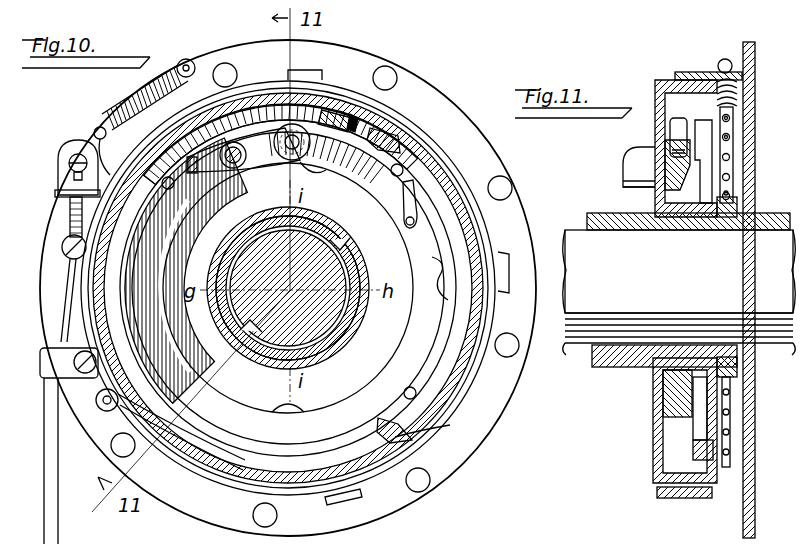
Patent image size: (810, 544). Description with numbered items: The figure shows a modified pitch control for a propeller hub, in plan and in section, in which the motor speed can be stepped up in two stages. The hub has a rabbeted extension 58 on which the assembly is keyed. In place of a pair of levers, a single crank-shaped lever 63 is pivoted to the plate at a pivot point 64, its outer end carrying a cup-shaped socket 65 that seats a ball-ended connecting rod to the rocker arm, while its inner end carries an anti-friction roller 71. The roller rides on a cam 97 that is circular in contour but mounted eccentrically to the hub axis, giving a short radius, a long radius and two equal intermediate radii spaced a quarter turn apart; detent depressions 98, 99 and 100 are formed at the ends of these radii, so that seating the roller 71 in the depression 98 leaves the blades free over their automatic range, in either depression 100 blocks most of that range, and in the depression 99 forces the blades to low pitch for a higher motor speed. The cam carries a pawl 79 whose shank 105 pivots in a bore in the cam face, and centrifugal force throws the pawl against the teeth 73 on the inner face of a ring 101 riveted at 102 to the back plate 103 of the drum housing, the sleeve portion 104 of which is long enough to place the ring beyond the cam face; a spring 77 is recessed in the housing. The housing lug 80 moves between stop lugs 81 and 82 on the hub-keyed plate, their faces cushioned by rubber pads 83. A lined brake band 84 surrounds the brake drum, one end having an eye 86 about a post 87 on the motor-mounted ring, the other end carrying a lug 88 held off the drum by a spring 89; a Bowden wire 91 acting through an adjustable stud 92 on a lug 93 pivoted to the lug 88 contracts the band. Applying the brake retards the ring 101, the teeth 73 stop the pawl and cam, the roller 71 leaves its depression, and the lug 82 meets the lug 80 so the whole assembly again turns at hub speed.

In FIG. 10, the extension 58 is at (368, 262).
In FIG. 11, the extension 58 is at (706, 229).
In FIG. 10, the lever 63 is at (264, 156).
In FIG. 11, the lever 63 is at (695, 125).
In FIG. 10, the pivot point 64 is at (238, 145).
In FIG. 11, the cup-shaped socket 65 is at (635, 165).
In FIG. 10, the anti-friction roller 71 is at (303, 128).
In FIG. 11, the anti-friction roller 71 is at (672, 138).
In FIG. 10, the teeth 73 is at (390, 425).
In FIG. 11, the spring 77 is at (734, 150).
In FIG. 10, the pawl 79 is at (410, 190).
In FIG. 11, the pawl 79 is at (729, 137).
In FIG. 10, the lug 80 is at (385, 140).
In FIG. 10, the stop lug 81 is at (343, 116).
In FIG. 10, the stop lug 82 is at (393, 436).
In FIG. 10, the rubber pad 83 is at (356, 125).
In FIG. 10, the lined brake band 84 is at (457, 147).
In FIG. 11, the lined brake band 84 is at (672, 76).
In FIG. 10, the eye 86 is at (104, 413).
In FIG. 10, the post 87 is at (120, 398).
In FIG. 10, the lug 88 is at (97, 128).
In FIG. 10, the spring 89 is at (140, 95).
In FIG. 10, the Bowden wire 91 is at (65, 313).
In FIG. 10, the adjustable stud 92 is at (70, 212).
In FIG. 10, the lug 93 is at (58, 158).
In FIG. 10, the cam 97 is at (400, 352).
In FIG. 11, the cam 97 is at (670, 190).
In FIG. 10, the detent depression 98 is at (222, 267).
In FIG. 10, the detent depression 99 is at (434, 287).
In FIG. 10, the detent depression 100 is at (303, 410).
In FIG. 11, the detent depression 100 is at (655, 178).
In FIG. 10, the ring 101 is at (400, 163).
In FIG. 11, the ring 101 is at (705, 80).
In FIG. 10, the rivet 102 is at (423, 128).
In FIG. 11, the rivet 102 is at (693, 452).
In FIG. 10, the back plate 103 is at (418, 216).
In FIG. 11, the back plate 103 is at (731, 118).
In FIG. 11, the sleeve portion 104 is at (724, 192).
In FIG. 11, the shank 105 is at (683, 214).